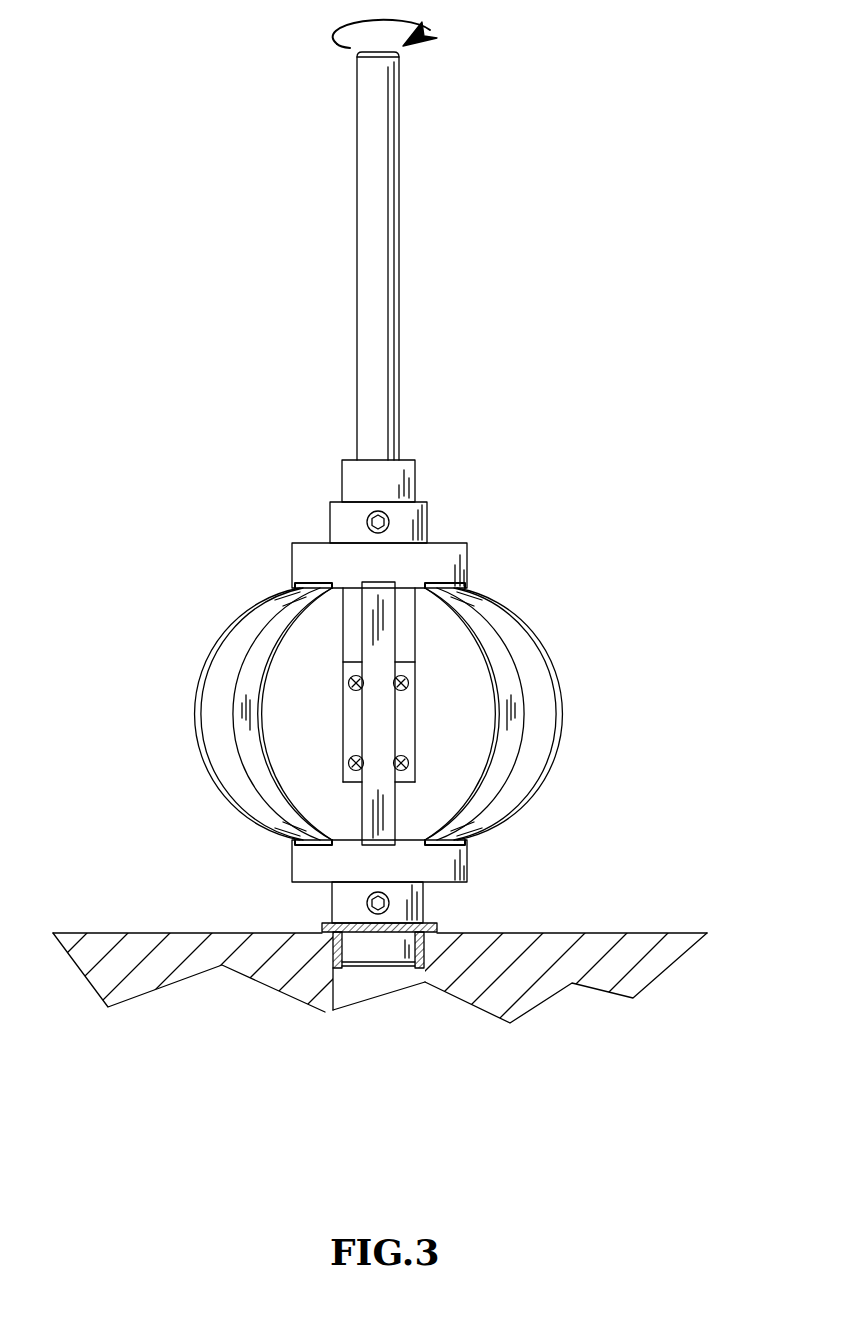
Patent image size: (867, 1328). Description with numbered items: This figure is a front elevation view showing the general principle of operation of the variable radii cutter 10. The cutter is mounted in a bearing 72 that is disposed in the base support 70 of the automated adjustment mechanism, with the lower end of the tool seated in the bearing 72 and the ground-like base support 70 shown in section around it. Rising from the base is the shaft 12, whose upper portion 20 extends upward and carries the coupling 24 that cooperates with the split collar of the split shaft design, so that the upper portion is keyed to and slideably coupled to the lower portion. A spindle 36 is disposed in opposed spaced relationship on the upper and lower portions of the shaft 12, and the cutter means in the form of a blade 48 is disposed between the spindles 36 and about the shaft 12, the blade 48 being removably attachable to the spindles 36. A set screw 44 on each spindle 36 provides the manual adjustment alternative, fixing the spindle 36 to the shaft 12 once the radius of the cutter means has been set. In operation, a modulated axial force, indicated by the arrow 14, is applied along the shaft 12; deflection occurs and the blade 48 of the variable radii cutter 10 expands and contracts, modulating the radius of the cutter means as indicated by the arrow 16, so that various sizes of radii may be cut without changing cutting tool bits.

The variable radii cutter 10 is at (158, 614).
The shaft 12 is at (405, 102).
The arrow indicating modulated axial force 14 is at (451, 232).
The arrow indicating radius modulation 16 is at (740, 707).
The upper portion of the shaft 20 is at (378, 148).
The coupling 24 is at (343, 667).
The spindle 36 is at (466, 545).
The set screw 44 is at (366, 522).
The blade 48 is at (372, 745).
The base support 70 is at (613, 933).
The bearing 72 is at (437, 930).